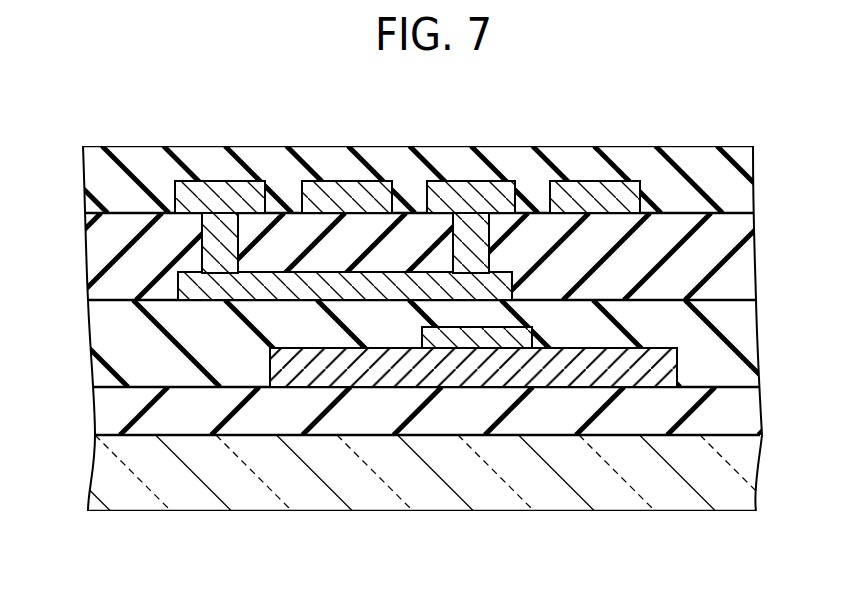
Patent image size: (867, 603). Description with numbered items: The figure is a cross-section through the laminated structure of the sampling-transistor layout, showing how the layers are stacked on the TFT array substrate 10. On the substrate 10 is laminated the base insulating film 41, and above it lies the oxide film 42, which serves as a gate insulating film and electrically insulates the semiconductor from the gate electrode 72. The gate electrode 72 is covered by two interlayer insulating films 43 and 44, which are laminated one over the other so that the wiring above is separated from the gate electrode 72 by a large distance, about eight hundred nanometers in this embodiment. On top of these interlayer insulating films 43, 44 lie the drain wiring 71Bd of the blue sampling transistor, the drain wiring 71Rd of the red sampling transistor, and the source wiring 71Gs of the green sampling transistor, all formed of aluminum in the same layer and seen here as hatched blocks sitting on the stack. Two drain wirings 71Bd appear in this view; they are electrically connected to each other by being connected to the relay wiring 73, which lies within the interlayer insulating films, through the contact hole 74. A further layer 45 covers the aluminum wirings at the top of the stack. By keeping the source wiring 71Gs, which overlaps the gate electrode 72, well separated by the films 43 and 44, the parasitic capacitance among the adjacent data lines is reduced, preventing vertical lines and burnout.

The TFT array substrate 10 is at (752, 465).
The base insulating film 41 is at (738, 415).
The oxide film 42 is at (285, 382).
The interlayer insulating film 43 is at (740, 345).
The interlayer insulating film 44 is at (738, 268).
The planarization layer 45 is at (735, 182).
The gate electrode 72 is at (477, 338).
The relay wiring 73 is at (187, 283).
The contact hole 74 is at (227, 233).
The drain wiring 71Bd is at (190, 188).
The drain wiring 71Rd is at (348, 186).
The source wiring 71Gs is at (603, 186).